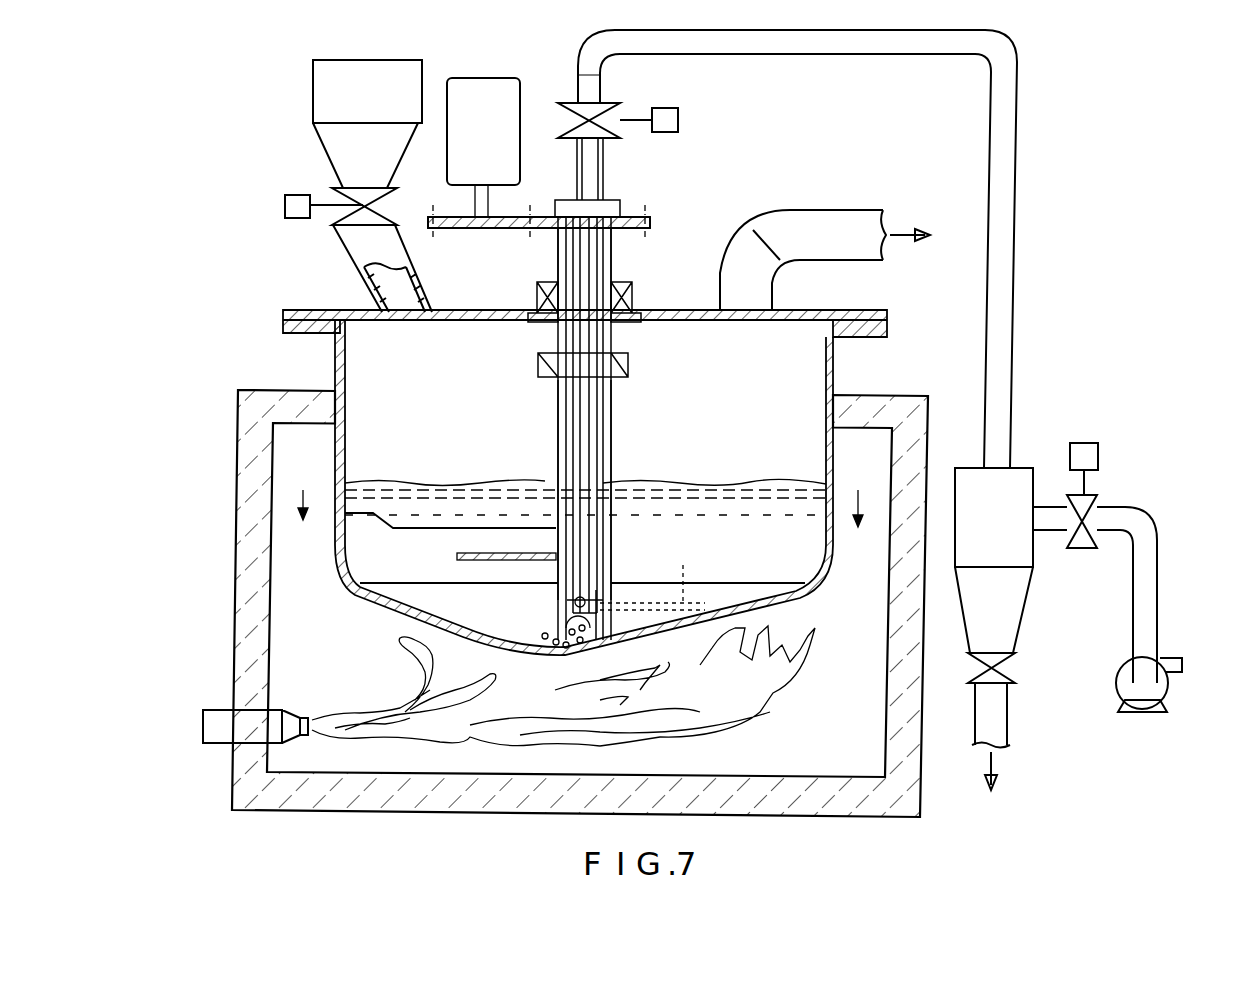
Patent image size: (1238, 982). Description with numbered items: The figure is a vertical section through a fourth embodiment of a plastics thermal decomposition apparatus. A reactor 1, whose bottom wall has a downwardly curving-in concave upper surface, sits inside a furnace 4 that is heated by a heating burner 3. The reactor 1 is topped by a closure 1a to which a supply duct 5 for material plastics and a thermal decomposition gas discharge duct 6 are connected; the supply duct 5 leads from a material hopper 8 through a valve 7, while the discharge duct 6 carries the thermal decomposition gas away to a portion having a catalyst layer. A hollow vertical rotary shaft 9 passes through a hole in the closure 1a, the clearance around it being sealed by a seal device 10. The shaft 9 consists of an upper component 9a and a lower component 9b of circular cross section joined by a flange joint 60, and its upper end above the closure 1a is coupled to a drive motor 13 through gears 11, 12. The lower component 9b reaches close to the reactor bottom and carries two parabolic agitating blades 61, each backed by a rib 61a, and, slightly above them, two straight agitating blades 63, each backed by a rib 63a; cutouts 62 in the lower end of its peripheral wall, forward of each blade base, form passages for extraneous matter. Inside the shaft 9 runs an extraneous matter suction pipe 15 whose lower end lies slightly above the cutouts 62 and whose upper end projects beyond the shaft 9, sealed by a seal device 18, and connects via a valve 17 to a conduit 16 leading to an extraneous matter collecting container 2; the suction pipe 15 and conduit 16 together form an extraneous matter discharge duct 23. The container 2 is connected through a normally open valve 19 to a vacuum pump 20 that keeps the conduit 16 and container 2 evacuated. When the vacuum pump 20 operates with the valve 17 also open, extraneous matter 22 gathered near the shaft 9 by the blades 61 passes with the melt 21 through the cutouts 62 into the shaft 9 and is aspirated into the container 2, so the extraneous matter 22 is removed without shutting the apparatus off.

The reactor 1 is at (835, 360).
The closure 1a is at (650, 316).
The extraneous matter collecting container 2 is at (1012, 627).
The heating burner 3 is at (203, 718).
The furnace 4 is at (236, 578).
The supply duct 5 is at (365, 290).
The thermal decomposition gas discharge duct 6 is at (830, 225).
The valve 7 is at (338, 193).
The material hopper 8 is at (313, 105).
The hollow vertical rotary shaft 9 is at (611, 394).
The upper component of rotary shaft 9a is at (611, 258).
The lower component of rotary shaft 9b is at (611, 438).
The seal device 10 is at (614, 318).
The gear 11 is at (652, 222).
The gear 12 is at (465, 232).
The drive motor 13 is at (490, 95).
The extraneous matter suction pipe 15 is at (573, 413).
The conduit 16 is at (778, 45).
The valve 17 is at (600, 103).
The seal device 18 is at (605, 183).
The valve 19 is at (1095, 500).
The vacuum pump 20 is at (1165, 690).
The melt 21 is at (757, 490).
The extraneous matter 22 is at (553, 650).
The extraneous matter discharge duct 23 is at (858, 53).
The flange joint 60 is at (538, 360).
The agitating blade 61 is at (758, 596).
The rib 61a is at (658, 568).
The cutout 62 is at (560, 616).
The agitating blade 63 is at (415, 530).
The rib 63a is at (498, 550).